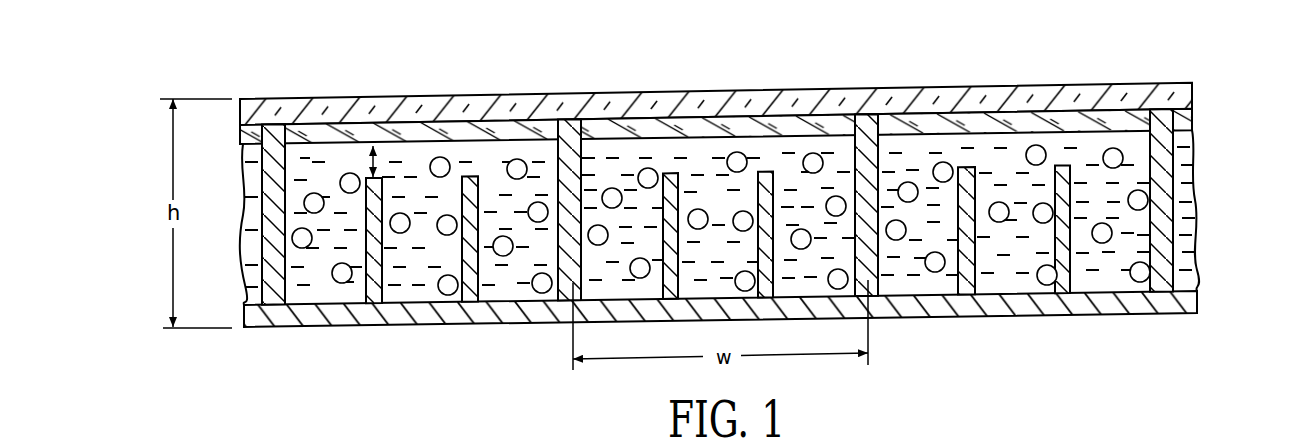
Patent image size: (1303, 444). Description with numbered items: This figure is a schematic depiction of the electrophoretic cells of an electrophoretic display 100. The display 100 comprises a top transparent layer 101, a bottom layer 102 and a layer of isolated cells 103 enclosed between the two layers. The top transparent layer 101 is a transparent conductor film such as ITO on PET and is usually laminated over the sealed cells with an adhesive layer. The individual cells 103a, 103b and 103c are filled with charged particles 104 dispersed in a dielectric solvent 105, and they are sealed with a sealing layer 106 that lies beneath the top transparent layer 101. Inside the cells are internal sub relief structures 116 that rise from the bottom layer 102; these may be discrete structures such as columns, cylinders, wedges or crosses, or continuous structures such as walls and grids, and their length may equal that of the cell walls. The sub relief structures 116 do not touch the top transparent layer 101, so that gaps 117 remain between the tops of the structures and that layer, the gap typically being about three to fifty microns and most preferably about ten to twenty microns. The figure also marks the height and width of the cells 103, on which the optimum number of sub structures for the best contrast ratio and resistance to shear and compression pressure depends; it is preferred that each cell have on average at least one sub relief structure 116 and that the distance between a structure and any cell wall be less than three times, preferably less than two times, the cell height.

The electrophoretic display 100 is at (243, 77).
The top transparent layer 101 is at (1200, 90).
The bottom layer 102 is at (1205, 300).
The layer of isolated cells 103 is at (1205, 201).
The cell 103a is at (418, 160).
The cell 103b is at (715, 155).
The cell 103c is at (1012, 150).
The charged particles 104 is at (292, 206).
The dielectric solvent 105 is at (297, 164).
The sealing layer 106 is at (522, 134).
The internal sub relief structure 116 is at (366, 287).
The gap 117 is at (370, 147).